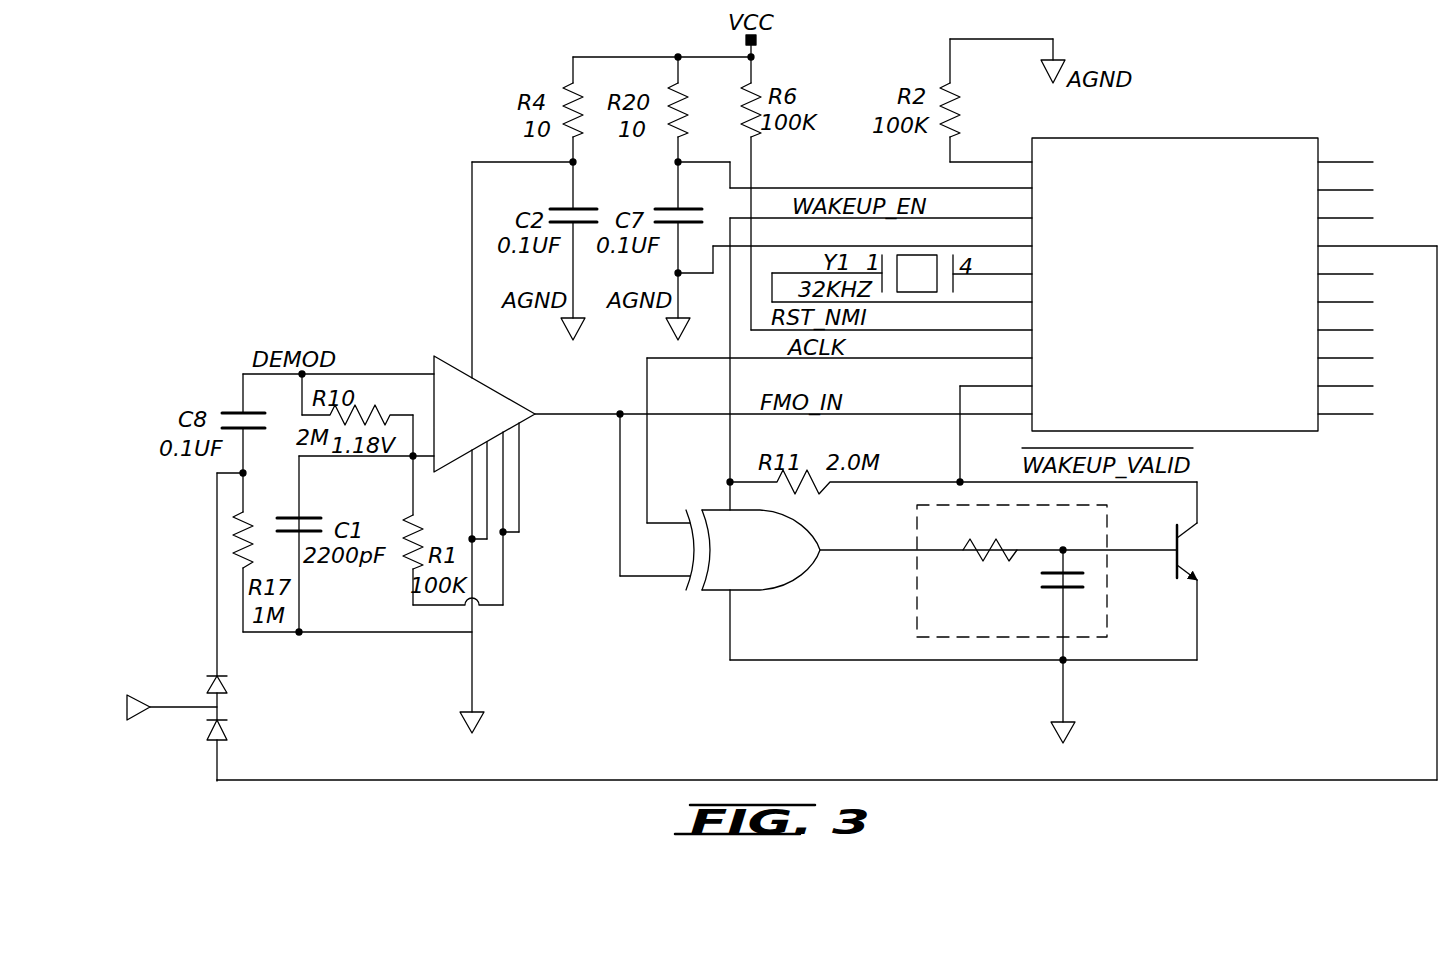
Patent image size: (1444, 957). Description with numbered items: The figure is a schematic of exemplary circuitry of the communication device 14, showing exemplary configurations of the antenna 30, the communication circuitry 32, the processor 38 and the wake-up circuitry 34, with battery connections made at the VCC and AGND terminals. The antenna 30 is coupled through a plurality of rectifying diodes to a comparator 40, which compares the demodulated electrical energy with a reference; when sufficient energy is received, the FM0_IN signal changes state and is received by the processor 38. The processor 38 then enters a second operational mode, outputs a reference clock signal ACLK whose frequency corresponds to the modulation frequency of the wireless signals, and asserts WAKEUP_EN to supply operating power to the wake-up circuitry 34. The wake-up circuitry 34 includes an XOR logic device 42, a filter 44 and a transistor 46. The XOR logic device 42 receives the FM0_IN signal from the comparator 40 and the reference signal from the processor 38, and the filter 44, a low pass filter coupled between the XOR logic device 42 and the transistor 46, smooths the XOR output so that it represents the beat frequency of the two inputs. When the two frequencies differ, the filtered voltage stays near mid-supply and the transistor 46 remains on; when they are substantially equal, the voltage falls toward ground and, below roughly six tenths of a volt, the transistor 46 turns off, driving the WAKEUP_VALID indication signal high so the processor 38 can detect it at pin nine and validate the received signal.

The communication device 14 is at (228, 124).
The antenna 30 is at (125, 706).
The communication circuitry 32 is at (1301, 108).
The wake-up circuitry 34 is at (1255, 715).
The processor 38 is at (1265, 436).
The comparator 40 is at (432, 347).
The XOR logic device 42 is at (797, 578).
The filter 44 is at (941, 645).
The transistor 46 is at (1206, 527).